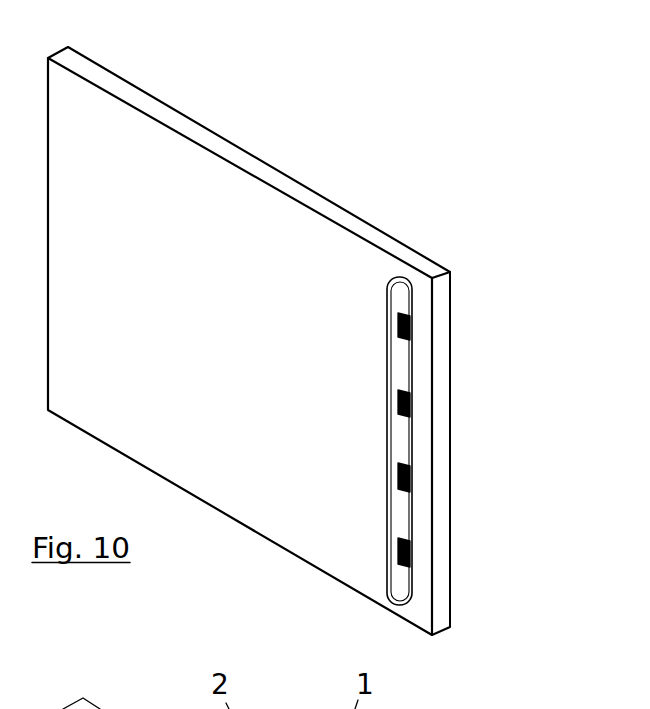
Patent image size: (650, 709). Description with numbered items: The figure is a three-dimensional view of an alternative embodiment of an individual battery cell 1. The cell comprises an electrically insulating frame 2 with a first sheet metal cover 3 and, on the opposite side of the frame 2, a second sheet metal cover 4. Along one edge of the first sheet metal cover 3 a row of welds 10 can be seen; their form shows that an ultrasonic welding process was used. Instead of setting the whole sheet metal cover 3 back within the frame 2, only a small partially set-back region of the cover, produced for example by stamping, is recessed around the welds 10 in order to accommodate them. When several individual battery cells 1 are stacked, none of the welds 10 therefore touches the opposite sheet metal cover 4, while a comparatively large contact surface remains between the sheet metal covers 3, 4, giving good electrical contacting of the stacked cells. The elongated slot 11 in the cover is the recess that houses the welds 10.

The individual battery cell 1 is at (320, 356).
The electrically insulating frame 2 is at (238, 157).
The first sheet metal cover 3 is at (297, 223).
The second sheet metal cover 4 is at (392, 230).
The welds 10 is at (412, 355).
The slot / recess 11 is at (402, 583).